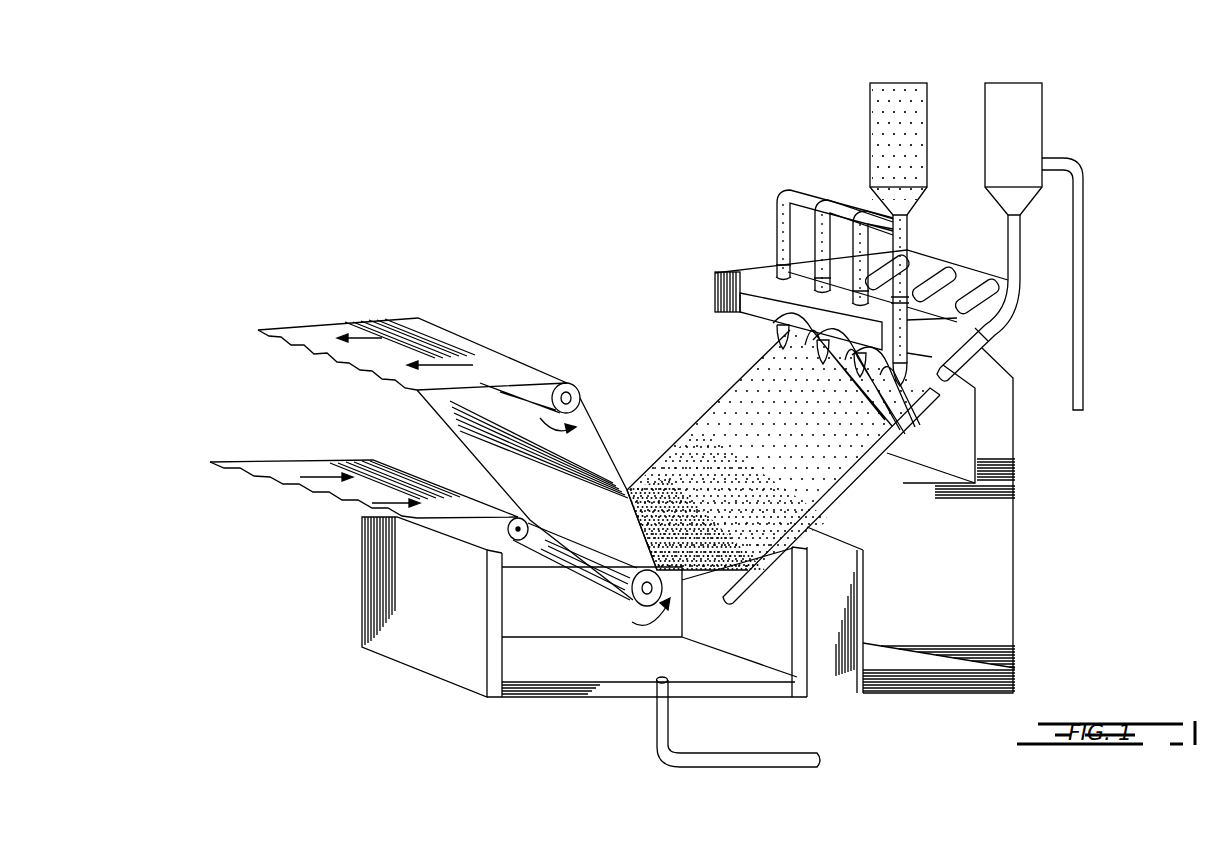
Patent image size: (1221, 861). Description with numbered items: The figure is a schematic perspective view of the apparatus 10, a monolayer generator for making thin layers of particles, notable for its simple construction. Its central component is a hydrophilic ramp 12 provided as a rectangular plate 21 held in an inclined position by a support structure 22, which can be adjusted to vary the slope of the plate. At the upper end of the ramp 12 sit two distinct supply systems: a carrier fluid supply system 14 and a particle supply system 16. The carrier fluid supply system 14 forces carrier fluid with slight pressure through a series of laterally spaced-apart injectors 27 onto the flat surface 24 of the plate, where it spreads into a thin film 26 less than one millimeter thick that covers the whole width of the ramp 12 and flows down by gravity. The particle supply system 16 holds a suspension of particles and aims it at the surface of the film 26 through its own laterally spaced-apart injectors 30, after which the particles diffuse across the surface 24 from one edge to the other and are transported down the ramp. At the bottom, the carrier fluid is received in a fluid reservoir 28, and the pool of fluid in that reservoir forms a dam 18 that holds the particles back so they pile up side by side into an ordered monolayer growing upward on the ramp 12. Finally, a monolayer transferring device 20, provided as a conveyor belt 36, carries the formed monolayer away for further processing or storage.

The apparatus 10 is at (599, 212).
The ramp 12 is at (693, 404).
The carrier fluid supply system 14 is at (1064, 126).
The particle supply system 16 is at (937, 106).
The dam 18 is at (637, 473).
The monolayer transferring device 20 is at (461, 328).
The rectangular plate 21 is at (872, 472).
The support structure 22 is at (992, 551).
The flat surface 24 is at (705, 590).
The thin film 26 is at (858, 472).
The injectors 27 is at (976, 345).
The fluid reservoir 28 is at (415, 628).
The injectors 30 is at (779, 337).
The conveyor belt 36 is at (366, 328).